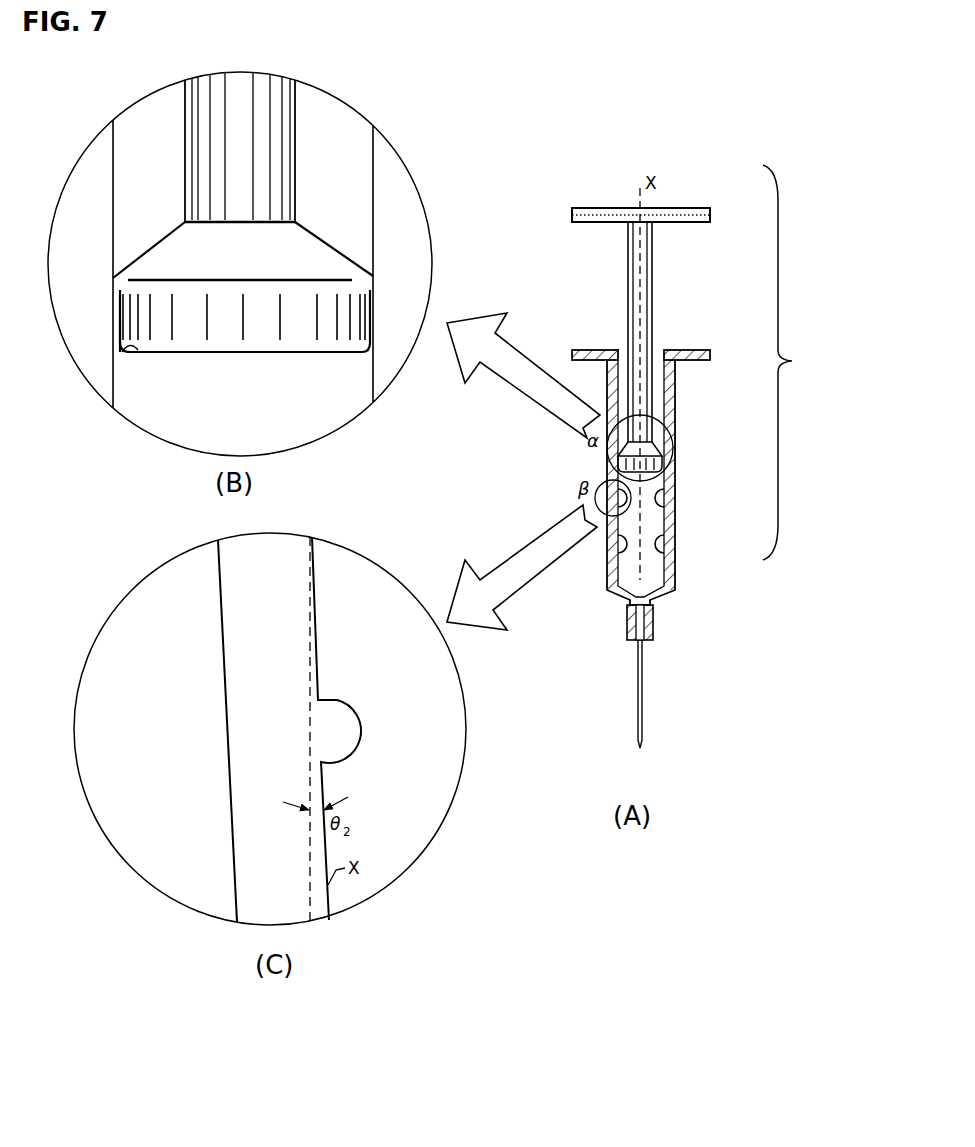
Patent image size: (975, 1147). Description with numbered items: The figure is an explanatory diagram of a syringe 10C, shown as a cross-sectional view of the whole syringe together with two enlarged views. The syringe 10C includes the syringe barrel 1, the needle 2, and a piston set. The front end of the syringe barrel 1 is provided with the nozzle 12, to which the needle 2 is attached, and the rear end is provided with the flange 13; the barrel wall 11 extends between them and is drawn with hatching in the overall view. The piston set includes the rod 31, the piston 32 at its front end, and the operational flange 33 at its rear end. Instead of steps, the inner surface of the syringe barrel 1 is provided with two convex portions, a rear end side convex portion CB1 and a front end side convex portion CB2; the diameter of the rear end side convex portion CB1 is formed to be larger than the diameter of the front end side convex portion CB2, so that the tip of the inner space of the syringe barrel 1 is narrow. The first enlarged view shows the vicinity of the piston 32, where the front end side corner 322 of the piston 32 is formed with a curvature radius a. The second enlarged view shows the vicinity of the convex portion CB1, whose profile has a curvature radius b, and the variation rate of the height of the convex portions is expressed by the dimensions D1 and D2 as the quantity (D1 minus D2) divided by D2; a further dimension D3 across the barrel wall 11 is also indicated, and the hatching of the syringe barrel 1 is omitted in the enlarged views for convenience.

The syringe barrel 1 is at (743, 330).
The needle 2 is at (644, 698).
The syringe 10C is at (799, 362).
The barrel body 11 is at (680, 482).
The nozzle 12 is at (655, 604).
The flange 13 is at (610, 352).
The rod 31 is at (651, 305).
The piston 32 is at (665, 462).
The operational flange 33 is at (595, 214).
The front end side corner 322 is at (122, 357).
The curvature radius of front end side corner a is at (130, 347).
The curvature radius of convex portions b is at (336, 712).
The rear end side convex portion CB1 is at (667, 514).
The front end side convex portion CB2 is at (670, 559).
The dimension D1 is at (318, 678).
The dimension D2 is at (356, 729).
The distance D3 is at (232, 777).